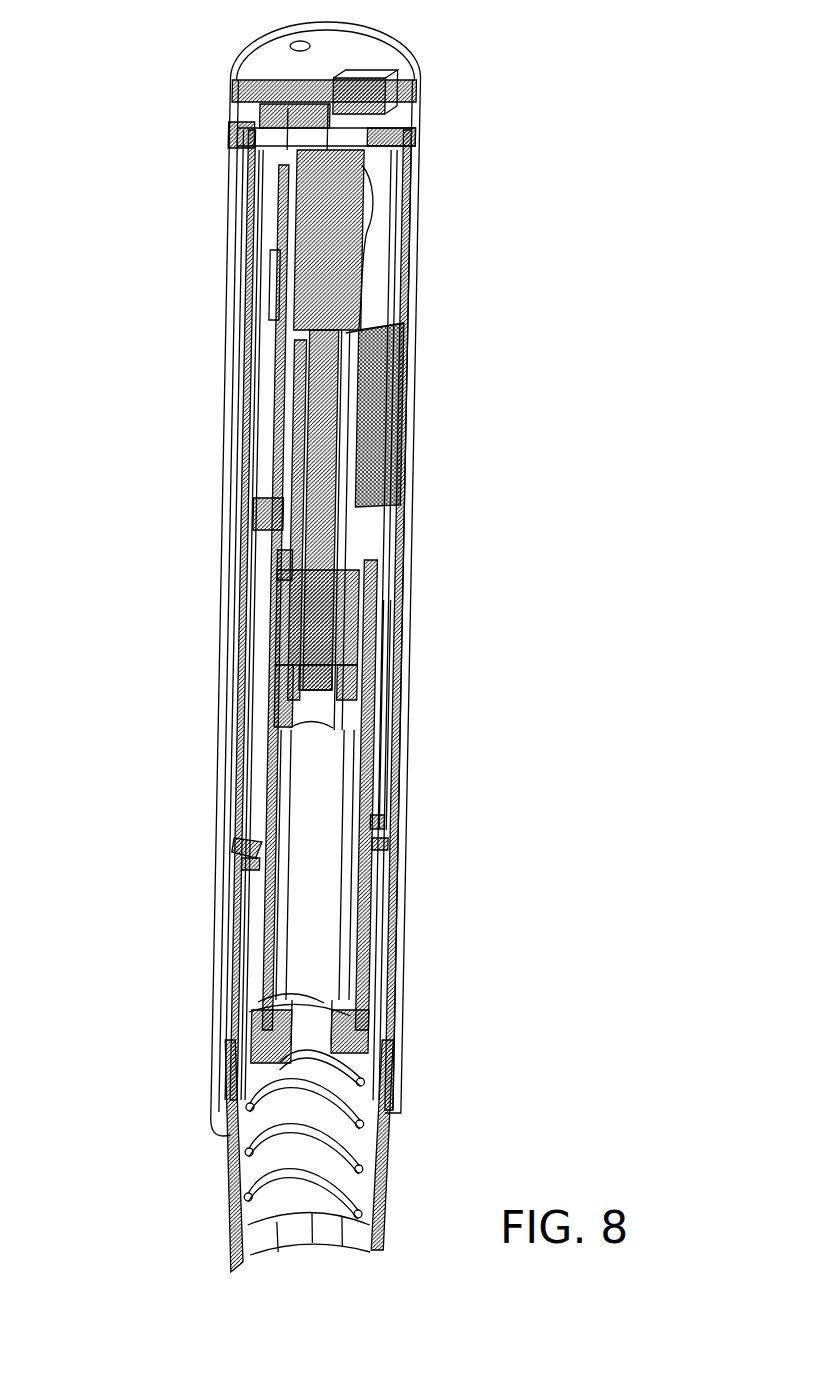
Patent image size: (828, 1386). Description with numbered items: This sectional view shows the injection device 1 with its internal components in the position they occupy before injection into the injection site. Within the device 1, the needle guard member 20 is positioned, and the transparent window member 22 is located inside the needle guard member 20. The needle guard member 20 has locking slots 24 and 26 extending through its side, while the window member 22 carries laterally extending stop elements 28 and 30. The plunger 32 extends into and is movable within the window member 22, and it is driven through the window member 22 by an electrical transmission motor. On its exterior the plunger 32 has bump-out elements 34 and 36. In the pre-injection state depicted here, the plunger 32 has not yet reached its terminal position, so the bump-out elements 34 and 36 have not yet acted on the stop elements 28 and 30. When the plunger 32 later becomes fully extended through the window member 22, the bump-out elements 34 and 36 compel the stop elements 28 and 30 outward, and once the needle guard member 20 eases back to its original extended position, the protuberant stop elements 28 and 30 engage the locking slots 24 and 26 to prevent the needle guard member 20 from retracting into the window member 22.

The device 1 is at (525, 55).
The needle guard member 20 is at (237, 962).
The transparent window member 22 is at (367, 640).
The locking slot 24 is at (255, 862).
The locking slot 26 is at (380, 842).
The stop element 28 is at (377, 823).
The stop element 30 is at (260, 845).
The plunger 32 is at (350, 528).
The bump-out element 34 is at (282, 583).
The bump-out element 36 is at (355, 585).